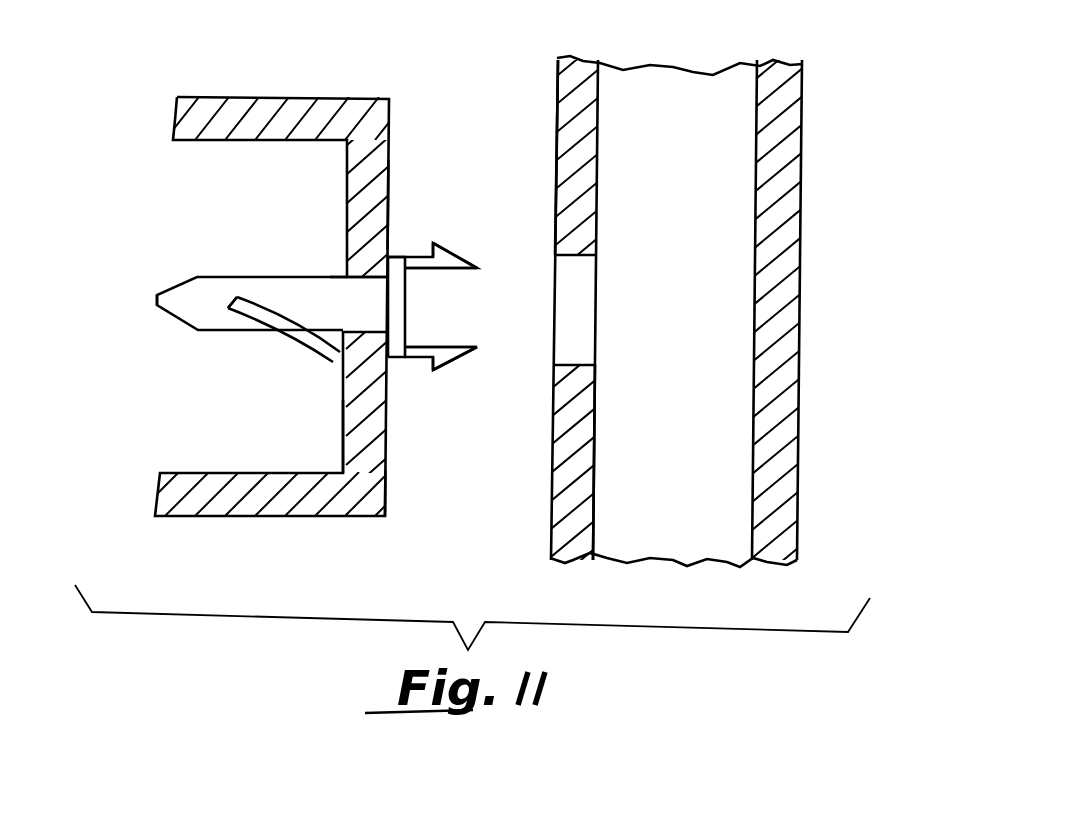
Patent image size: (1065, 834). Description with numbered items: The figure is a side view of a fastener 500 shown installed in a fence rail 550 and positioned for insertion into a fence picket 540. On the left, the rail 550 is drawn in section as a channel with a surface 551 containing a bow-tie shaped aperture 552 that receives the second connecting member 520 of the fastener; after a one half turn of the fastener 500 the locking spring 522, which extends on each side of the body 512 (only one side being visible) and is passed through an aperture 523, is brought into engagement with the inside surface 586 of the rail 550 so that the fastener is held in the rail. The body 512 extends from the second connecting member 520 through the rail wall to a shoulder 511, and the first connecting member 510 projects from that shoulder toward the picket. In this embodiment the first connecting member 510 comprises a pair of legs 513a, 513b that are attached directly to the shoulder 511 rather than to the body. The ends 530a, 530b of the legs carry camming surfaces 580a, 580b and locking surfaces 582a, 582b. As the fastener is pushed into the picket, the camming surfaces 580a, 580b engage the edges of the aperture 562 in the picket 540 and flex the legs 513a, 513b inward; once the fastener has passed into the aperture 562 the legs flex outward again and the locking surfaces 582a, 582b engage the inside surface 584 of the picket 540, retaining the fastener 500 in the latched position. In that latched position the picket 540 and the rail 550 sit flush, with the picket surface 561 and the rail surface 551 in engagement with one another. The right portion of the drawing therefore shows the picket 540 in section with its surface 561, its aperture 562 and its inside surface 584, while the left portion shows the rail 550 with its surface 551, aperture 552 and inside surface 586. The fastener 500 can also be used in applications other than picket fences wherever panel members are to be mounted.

The fastener 500 is at (173, 323).
The first connecting member 510 is at (410, 375).
The shoulder 511 is at (402, 252).
The body 512 is at (342, 278).
The leg 513a is at (428, 272).
The leg 513b is at (430, 345).
The second connecting member 520 is at (182, 277).
The locking spring 522 is at (263, 337).
The aperture 523 is at (232, 298).
The end of leg 530a is at (477, 348).
The end of leg 530b is at (477, 268).
The picket 540 is at (797, 130).
The rail 550 is at (305, 98).
The surface 551 is at (386, 494).
The bow-tie shaped aperture 552 is at (389, 203).
The surface 561 is at (557, 80).
The aperture 562 is at (575, 362).
The camming surface 580a is at (455, 360).
The camming surface 580b is at (455, 254).
The locking surface 582a is at (434, 372).
The locking surface 582b is at (432, 243).
The inside surface 584 is at (594, 472).
The inside surface 586 is at (341, 435).